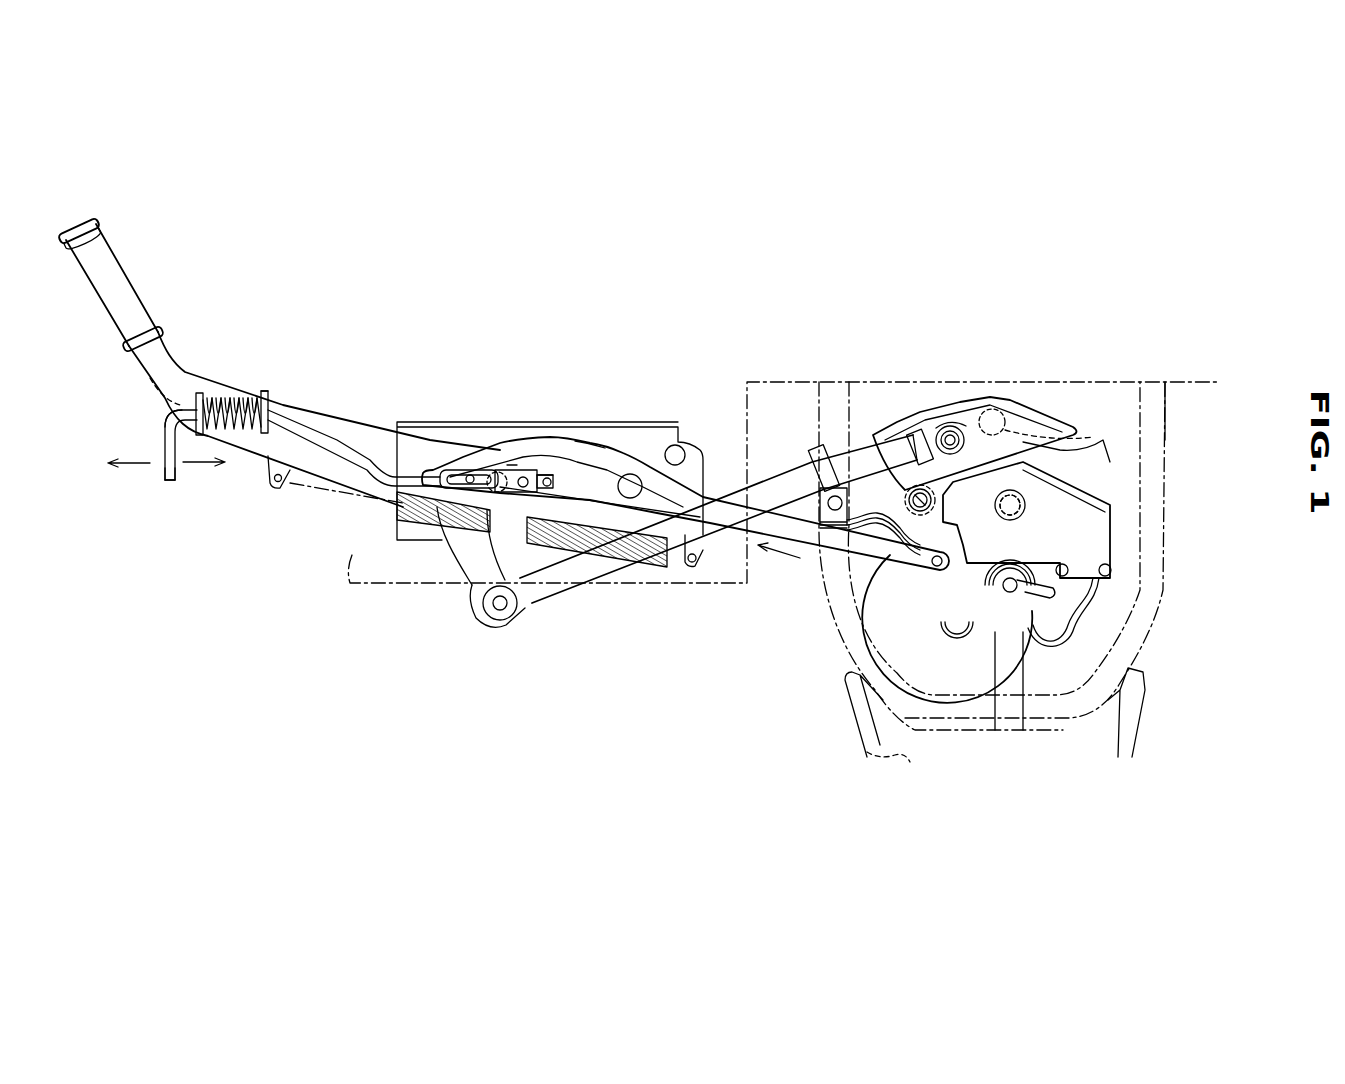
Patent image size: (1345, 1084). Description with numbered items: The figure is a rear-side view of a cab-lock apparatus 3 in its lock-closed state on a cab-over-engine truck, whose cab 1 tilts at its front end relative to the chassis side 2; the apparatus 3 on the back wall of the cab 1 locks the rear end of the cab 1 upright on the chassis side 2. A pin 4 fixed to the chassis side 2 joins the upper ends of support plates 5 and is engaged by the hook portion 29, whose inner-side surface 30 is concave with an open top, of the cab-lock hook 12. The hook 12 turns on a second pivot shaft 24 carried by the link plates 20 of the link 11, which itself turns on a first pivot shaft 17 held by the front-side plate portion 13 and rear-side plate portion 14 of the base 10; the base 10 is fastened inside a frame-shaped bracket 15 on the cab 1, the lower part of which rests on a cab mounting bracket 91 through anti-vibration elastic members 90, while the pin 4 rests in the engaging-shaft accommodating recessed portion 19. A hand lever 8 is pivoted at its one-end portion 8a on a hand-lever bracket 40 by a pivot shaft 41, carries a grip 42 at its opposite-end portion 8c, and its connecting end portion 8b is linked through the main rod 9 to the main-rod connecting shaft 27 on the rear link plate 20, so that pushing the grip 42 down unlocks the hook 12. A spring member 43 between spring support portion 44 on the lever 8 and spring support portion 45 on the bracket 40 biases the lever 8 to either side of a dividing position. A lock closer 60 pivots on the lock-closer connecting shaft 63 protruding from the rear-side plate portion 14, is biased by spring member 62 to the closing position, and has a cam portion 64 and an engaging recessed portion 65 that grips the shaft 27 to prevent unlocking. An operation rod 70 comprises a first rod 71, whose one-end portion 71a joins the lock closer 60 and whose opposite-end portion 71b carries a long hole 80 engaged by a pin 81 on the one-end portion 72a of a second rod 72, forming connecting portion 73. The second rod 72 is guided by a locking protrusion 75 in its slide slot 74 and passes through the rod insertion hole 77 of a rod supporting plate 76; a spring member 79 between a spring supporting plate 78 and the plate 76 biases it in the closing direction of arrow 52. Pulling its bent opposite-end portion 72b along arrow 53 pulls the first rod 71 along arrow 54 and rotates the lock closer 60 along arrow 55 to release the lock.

The cab 1 is at (1214, 382).
The chassis side 2 is at (1140, 718).
The cab-lock apparatus 3 is at (666, 684).
The pin 4 is at (1032, 632).
The support plates 5 is at (1025, 678).
The hand lever 8 is at (173, 362).
The one-end portion 8a is at (513, 468).
The connecting end portion 8b is at (477, 603).
The opposite-end portion 8c is at (147, 368).
The main rod 9 is at (771, 480).
The base 10 is at (1130, 518).
The link 11 is at (1045, 412).
The cab-lock hook 12 is at (880, 585).
The front-side plate portion 13 is at (1140, 457).
The rear-side plate portion 14 is at (1116, 547).
The bracket 15 is at (1165, 425).
The first pivot shaft 17 is at (1027, 521).
The engaging-shaft accommodating recessed portion 19 is at (1035, 652).
The link plates 20 is at (1016, 412).
The second pivot shaft 24 is at (998, 410).
The main-rod connecting shaft 27 is at (958, 426).
The hook portion 29 is at (1015, 605).
The inner-side surface 30 is at (993, 632).
The hand-lever bracket 40 is at (398, 420).
The pivot shaft 41 is at (497, 485).
The grip 42 is at (133, 280).
The spring member 43 is at (650, 568).
The spring support portion 44 is at (277, 488).
The spring support portion 45 is at (707, 565).
The arrow 52 is at (203, 470).
The arrow 53 is at (127, 467).
The arrow 54 is at (790, 560).
The arrow 55 is at (1093, 426).
The lock closer 60 is at (1020, 478).
The spring member 62 is at (900, 487).
The lock-closer connecting shaft 63 is at (862, 482).
The cam portion 64 is at (1027, 412).
The engaging recessed portion 65 is at (928, 428).
The operation rod 70 is at (323, 423).
The first rod 71 is at (703, 488).
The one-end portion 71a is at (930, 568).
The opposite-end portion 71b is at (592, 444).
The second rod 72 is at (345, 447).
The one-end portion 72a is at (517, 472).
The opposite-end portion 72b is at (165, 475).
The connecting portion 73 is at (548, 345).
The slide slot 74 is at (470, 474).
The locking protrusion 75 is at (450, 472).
The rod supporting plate 76 is at (199, 393).
The rod insertion hole 77 is at (178, 402).
The spring supporting plate 78 is at (265, 392).
The spring member 79 is at (243, 398).
The long hole 80 is at (553, 477).
The pin 81 is at (527, 478).
The anti-vibration elastic members 90 is at (1143, 680).
The cab mounting bracket 91 is at (1080, 757).